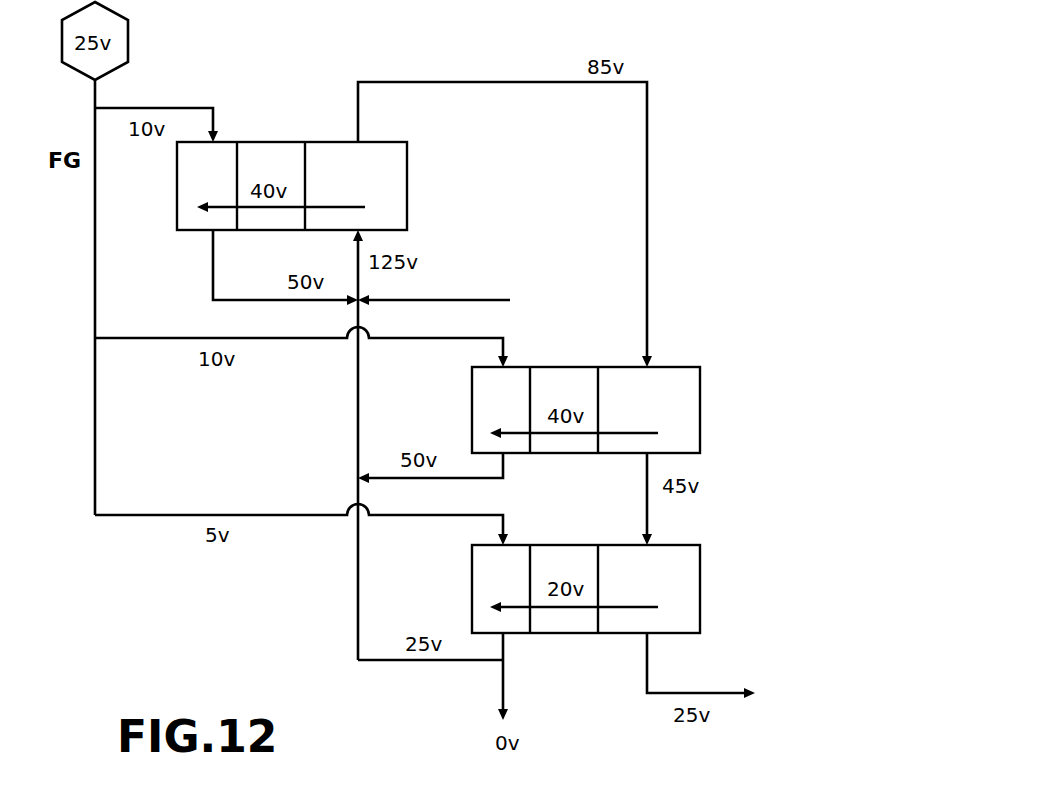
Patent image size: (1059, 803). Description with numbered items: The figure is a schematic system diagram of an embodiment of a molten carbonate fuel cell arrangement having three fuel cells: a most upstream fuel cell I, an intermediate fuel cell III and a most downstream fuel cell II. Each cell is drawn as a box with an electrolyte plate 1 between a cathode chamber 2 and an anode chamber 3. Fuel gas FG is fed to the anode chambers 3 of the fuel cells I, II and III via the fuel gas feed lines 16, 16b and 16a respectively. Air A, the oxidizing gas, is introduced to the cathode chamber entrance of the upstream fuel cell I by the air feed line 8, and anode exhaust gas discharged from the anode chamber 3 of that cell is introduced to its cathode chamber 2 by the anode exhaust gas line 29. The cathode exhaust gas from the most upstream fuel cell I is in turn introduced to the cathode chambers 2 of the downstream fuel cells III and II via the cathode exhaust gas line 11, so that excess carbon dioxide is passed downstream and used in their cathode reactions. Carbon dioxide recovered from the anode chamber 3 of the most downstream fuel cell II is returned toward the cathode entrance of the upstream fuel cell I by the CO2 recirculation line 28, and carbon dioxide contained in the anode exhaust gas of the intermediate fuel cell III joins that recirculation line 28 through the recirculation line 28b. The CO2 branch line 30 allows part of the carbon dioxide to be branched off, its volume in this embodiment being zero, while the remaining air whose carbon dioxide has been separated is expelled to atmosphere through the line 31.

The fuel gas feed line 16 is at (206, 102).
The fuel gas feed line 16a is at (195, 513).
The fuel gas feed line 16b is at (195, 336).
The electrolyte plate 1 is at (274, 224).
The cathode chamber 2 is at (398, 205).
The anode chamber 3 is at (188, 200).
The air feed line 8 is at (455, 300).
The cathode exhaust gas line 11 is at (647, 242).
The CO2 recirculation line 28 is at (356, 615).
The recirculation line 28b is at (472, 480).
The anode exhaust gas line 29 is at (213, 283).
The CO2 branch line 30 is at (500, 702).
The line 31 is at (668, 693).
The fuel cell I is at (284, 137).
The fuel cell II is at (628, 510).
The fuel cell III is at (597, 358).
The air A is at (523, 306).